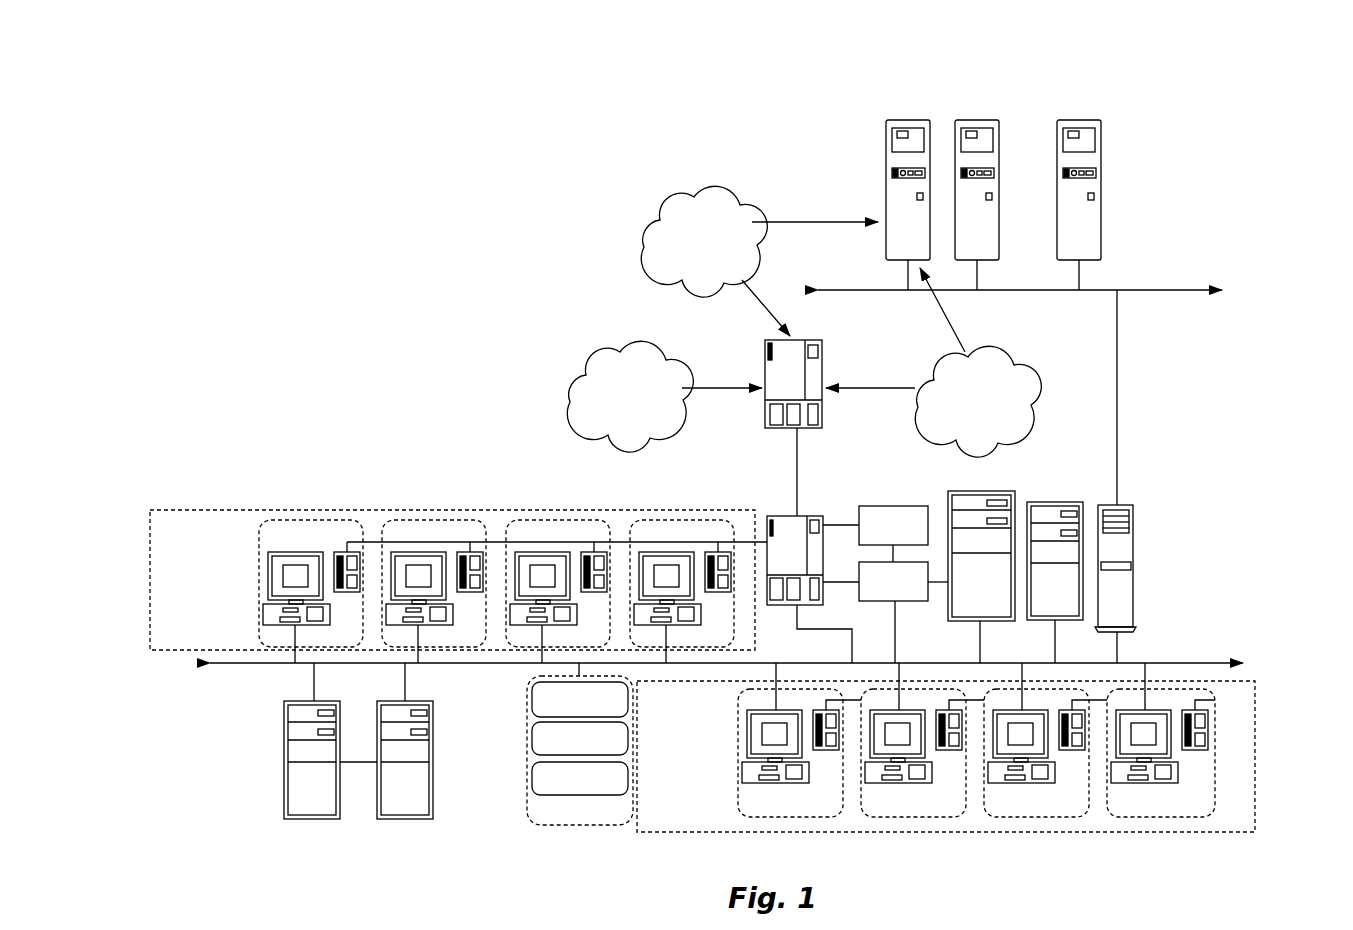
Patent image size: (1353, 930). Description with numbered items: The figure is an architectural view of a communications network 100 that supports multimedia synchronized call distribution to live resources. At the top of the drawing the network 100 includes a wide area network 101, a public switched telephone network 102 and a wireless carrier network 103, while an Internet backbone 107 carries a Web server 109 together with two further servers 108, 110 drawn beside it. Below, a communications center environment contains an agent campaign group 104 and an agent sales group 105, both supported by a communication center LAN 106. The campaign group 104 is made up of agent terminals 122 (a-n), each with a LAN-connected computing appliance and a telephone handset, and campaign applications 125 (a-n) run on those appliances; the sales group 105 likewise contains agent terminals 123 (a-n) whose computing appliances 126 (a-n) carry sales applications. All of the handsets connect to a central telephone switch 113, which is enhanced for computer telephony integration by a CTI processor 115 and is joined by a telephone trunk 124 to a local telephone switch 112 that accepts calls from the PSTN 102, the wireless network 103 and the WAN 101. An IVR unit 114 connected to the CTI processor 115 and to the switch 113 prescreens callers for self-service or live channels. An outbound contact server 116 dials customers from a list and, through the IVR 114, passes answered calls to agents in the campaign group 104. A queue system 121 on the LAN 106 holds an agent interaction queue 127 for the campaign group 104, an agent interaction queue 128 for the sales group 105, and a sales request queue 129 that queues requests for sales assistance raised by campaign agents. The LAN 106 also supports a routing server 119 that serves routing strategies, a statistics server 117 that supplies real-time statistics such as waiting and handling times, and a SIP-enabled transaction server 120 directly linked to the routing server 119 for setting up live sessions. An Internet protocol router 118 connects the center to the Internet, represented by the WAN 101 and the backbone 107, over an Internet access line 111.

The communications network 100 is at (420, 283).
The wide area network 101 is at (1035, 395).
The public-switched-telephone-network 102 is at (612, 350).
The wireless carrier network 103 is at (680, 185).
The agent campaign group 104 is at (427, 488).
The agent sales group 105 is at (1258, 742).
The communication center LAN 106 is at (278, 666).
The Internet backbone 107 is at (1025, 293).
The enterprise server (ES) 108 is at (1101, 198).
The Web server 109 is at (886, 197).
The enterprise server (ES) 110 is at (968, 120).
The Internet access line 111 is at (1119, 375).
The local telephone switch 112 is at (825, 365).
The central telephone switch 113 is at (788, 512).
The IVR unit 114 is at (893, 504).
The CTI processor 115 is at (888, 602).
The outbound contact server 116 is at (970, 621).
The statistics server 117 is at (1060, 503).
The Internet protocol router 118 is at (1135, 553).
The routing server 119 is at (284, 750).
The transaction server 120 is at (432, 752).
The queue system 121 is at (518, 757).
The agent terminals 122 is at (255, 580).
The agent terminals 123 is at (730, 758).
The telephone trunk 124 is at (795, 466).
The campaign applications 125 is at (545, 572).
The agent computing appliances (a-n) 126 is at (900, 722).
The agent interaction queue 127 is at (527, 700).
The AIQ service group queue 128 is at (628, 737).
The sales request queue 129 is at (628, 783).